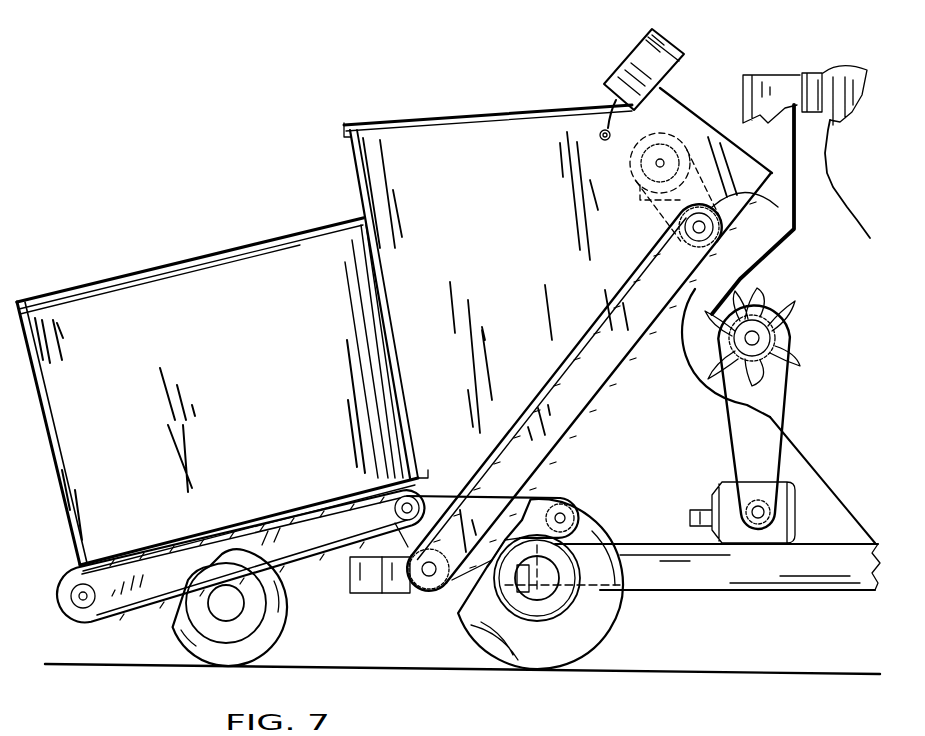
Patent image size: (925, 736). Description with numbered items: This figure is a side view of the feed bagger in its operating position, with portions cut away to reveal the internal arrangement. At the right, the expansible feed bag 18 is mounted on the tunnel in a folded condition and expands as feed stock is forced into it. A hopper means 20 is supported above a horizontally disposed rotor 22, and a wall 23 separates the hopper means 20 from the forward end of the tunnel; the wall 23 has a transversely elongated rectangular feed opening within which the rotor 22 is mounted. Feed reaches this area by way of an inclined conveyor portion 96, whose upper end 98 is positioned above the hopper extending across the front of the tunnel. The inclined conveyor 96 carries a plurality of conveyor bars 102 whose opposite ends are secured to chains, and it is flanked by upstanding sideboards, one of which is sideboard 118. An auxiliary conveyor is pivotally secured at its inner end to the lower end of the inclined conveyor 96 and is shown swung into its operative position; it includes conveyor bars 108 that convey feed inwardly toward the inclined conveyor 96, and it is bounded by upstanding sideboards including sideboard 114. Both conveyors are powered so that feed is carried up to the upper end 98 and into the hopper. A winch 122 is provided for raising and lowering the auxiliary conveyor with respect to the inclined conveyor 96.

The feed bag 18 is at (856, 87).
The hopper means 20 is at (763, 153).
The rotor 22 is at (799, 305).
The wall 23 is at (797, 200).
The inclined conveyor portion 96 is at (594, 333).
The upper end 98 is at (732, 220).
The conveyor bars 102 is at (589, 382).
The conveyor bars 108 is at (263, 515).
The sideboard 114 is at (260, 393).
The sideboard 118 is at (520, 301).
The winch 122 is at (616, 54).